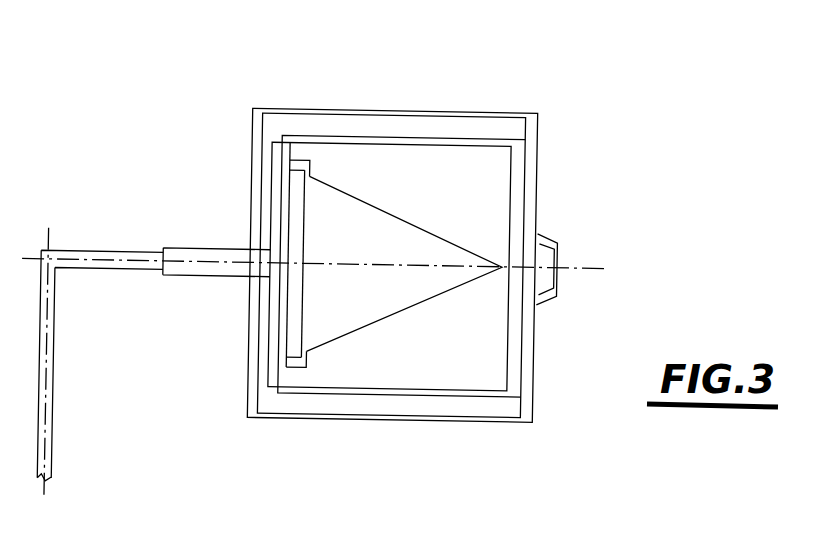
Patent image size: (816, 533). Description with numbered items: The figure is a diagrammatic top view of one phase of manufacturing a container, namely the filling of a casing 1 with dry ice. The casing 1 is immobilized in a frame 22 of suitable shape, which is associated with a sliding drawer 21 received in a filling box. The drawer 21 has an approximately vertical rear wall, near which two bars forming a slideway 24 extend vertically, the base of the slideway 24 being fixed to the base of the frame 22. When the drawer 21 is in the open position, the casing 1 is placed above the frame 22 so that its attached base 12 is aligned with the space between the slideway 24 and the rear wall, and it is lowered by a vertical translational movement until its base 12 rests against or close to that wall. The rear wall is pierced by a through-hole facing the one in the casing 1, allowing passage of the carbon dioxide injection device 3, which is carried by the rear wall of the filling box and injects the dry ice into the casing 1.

The casing 1 is at (426, 226).
The carbon dioxide injection device 3 is at (164, 241).
The attached base 12 is at (311, 186).
The sliding drawer 21 is at (530, 110).
The frame 22 is at (395, 140).
The slideway 24 is at (308, 162).